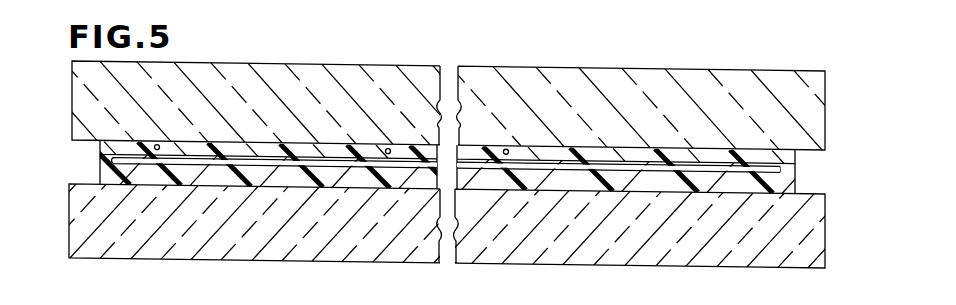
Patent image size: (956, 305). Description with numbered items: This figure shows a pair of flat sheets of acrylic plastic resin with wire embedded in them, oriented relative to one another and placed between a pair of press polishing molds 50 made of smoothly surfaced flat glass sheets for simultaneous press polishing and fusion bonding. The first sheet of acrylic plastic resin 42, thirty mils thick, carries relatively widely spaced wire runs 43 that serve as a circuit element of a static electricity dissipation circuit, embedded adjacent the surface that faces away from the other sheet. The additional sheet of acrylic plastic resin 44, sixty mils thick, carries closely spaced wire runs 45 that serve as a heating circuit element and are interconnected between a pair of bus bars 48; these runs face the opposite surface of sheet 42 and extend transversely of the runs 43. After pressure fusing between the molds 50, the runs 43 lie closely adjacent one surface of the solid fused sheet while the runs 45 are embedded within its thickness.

The first sheet of acrylic plastic resin 42 is at (100, 148).
The widely spaced wire runs 43 is at (506, 149).
The additional sheet of transparent acrylic plastic resin 44 is at (100, 181).
The closely spaced wire runs 45 is at (673, 157).
The bus bars 48 is at (778, 174).
The substrate plates 50 is at (340, 64).